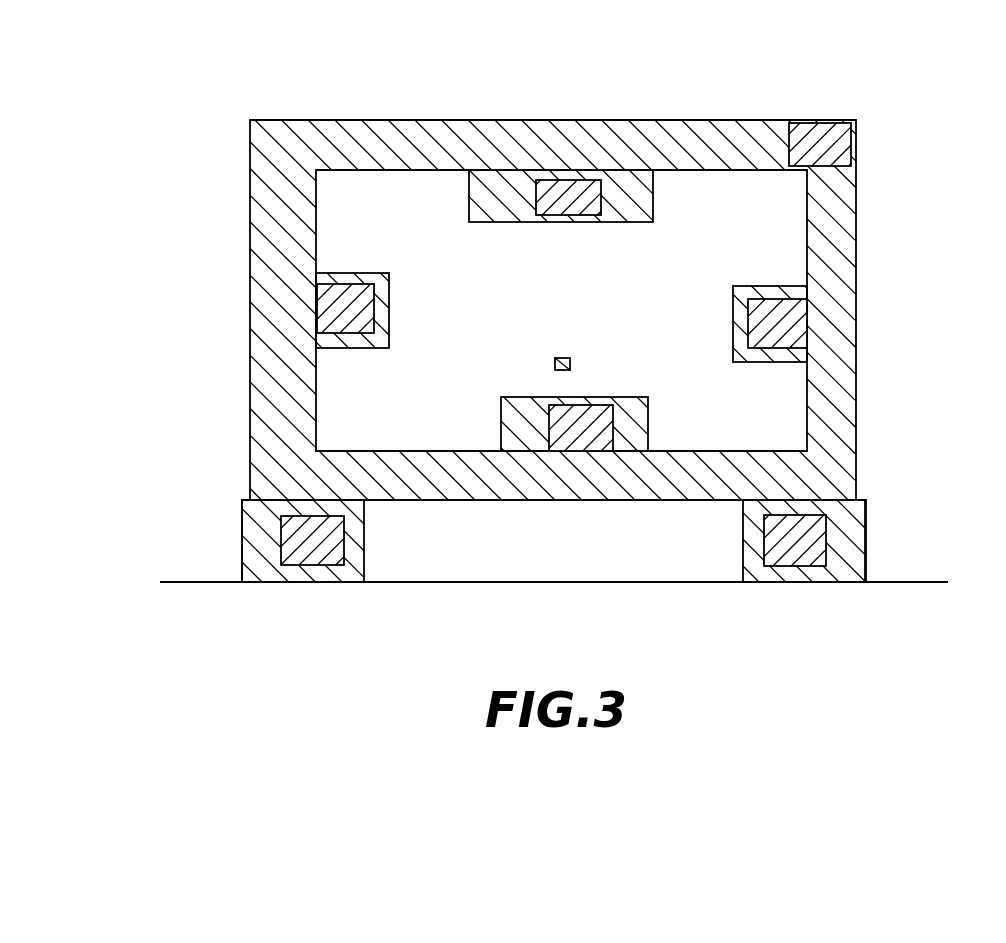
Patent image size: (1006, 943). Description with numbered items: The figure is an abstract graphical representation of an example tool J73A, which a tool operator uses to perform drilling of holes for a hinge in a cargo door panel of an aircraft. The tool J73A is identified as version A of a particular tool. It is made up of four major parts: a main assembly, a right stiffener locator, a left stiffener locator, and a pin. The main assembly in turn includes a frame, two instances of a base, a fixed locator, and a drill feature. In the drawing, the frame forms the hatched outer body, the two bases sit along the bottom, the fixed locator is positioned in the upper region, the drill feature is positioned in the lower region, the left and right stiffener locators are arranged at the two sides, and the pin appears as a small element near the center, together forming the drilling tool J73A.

The tool J73A is at (900, 108).